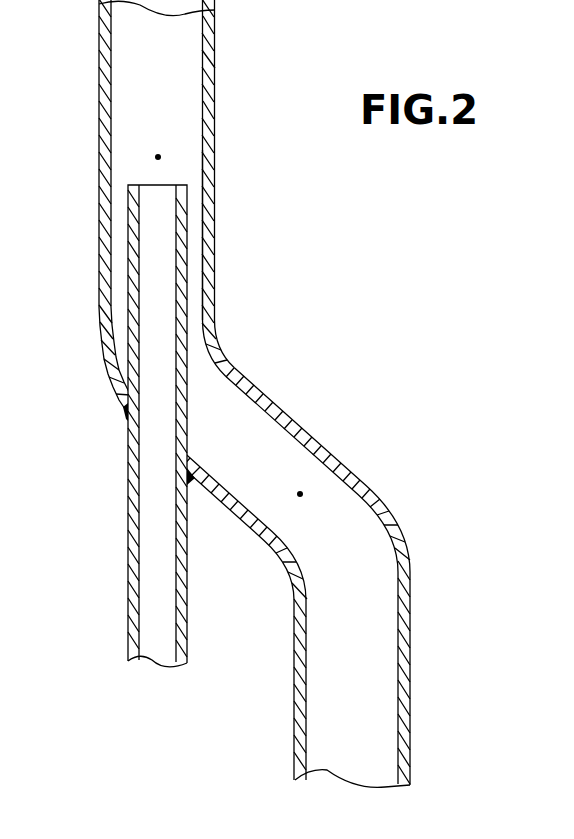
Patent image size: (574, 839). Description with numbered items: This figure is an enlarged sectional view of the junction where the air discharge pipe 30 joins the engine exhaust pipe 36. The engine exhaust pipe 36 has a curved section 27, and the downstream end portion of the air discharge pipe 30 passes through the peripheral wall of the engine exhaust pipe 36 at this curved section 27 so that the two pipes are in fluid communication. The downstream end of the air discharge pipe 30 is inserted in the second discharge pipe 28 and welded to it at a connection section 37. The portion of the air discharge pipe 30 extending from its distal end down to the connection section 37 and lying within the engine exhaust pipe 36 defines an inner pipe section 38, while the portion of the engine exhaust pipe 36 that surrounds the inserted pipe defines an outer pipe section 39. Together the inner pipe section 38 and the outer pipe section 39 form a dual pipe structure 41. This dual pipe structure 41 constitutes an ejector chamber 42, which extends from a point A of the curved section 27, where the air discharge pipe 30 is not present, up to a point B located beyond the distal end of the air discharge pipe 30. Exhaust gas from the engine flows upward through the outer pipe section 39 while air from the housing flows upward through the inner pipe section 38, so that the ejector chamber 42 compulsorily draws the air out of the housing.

The curved section 27 is at (242, 442).
The second discharge pipe 28 is at (410, 626).
The air discharge pipe 30 is at (100, 426).
The engine exhaust pipe 36 is at (422, 651).
The connection section 37 is at (126, 418).
The inner pipe section 38 is at (128, 272).
The outer pipe section 39 is at (214, 278).
The dual pipe structure 41 is at (175, 161).
The ejector chamber 42 is at (246, 336).
The point A is at (303, 494).
The point B is at (155, 157).